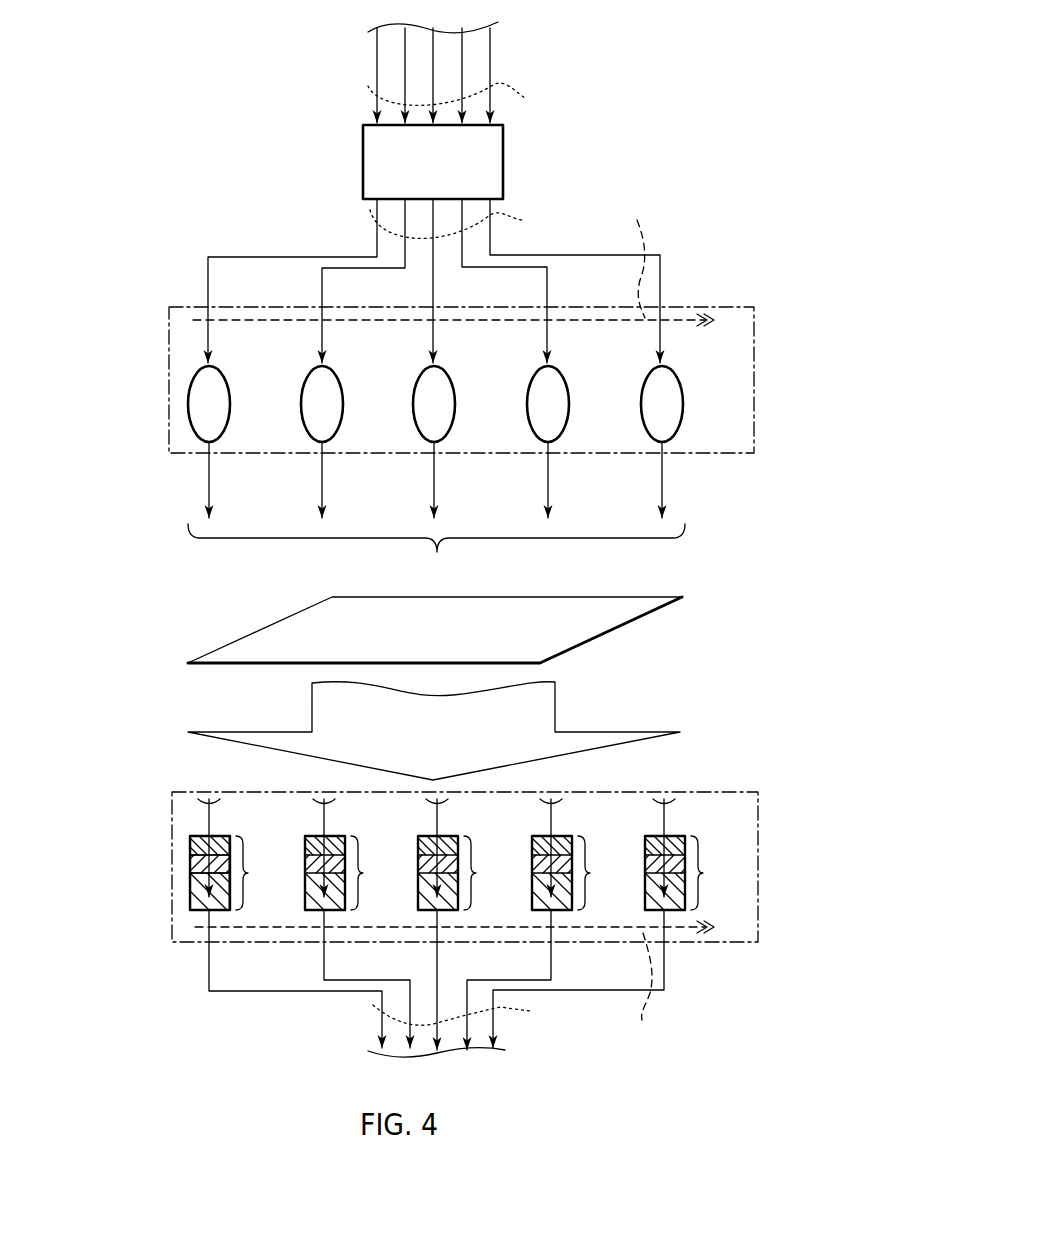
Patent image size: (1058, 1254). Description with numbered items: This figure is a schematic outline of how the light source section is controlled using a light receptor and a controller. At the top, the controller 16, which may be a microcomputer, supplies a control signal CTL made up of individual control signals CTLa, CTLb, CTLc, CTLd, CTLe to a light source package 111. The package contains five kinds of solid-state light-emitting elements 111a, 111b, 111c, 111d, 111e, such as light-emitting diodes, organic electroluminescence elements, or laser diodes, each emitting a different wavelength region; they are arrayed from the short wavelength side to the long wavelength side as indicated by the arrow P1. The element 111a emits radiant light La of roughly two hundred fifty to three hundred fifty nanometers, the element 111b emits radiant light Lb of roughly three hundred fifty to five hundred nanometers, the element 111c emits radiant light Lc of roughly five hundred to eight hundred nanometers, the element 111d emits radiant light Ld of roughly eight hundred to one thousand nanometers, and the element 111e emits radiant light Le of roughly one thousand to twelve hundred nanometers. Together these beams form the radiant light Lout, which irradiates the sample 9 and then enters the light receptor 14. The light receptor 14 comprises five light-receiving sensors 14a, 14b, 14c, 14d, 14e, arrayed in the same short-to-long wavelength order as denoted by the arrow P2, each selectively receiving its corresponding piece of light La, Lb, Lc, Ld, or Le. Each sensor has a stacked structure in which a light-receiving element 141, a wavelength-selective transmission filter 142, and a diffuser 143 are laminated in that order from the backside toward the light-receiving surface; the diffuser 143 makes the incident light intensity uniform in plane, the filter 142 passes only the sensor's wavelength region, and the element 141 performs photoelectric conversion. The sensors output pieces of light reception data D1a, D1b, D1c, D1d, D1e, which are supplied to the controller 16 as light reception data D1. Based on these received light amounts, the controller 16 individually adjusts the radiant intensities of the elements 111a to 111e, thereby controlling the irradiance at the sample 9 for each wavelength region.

The light reception data D1a is at (374, 45).
The light reception data D1b is at (403, 70).
The light reception data D1c is at (430, 84).
The light reception data D1d is at (466, 68).
The light reception data D1e is at (492, 45).
The light reception data D1 is at (468, 554).
The controller 16 is at (505, 160).
The control signal CTL is at (471, 224).
The control signal CTLa is at (210, 287).
The control signal CTLb is at (324, 287).
The control signal CTLc is at (436, 287).
The control signal CTLd is at (549, 287).
The control signal CTLe is at (662, 287).
The arrow P1 is at (636, 256).
The light source package 111 is at (756, 380).
The solid-state light-emitting element 111a is at (229, 382).
The solid-state light-emitting element 111b is at (342, 382).
The solid-state light-emitting element 111c is at (454, 382).
The solid-state light-emitting element 111d is at (568, 382).
The solid-state light-emitting element 111e is at (682, 382).
The radiant light La is at (211, 472).
The radiant light Lb is at (324, 472).
The radiant light Lc is at (436, 472).
The radiant light Ld is at (550, 472).
The radiant light Le is at (664, 472).
The radiant light Lout is at (436, 652).
The sample 9 is at (607, 632).
The light receptor 14 is at (760, 865).
The light-receiving sensor 14a is at (241, 854).
The light-receiving sensor 14b is at (356, 854).
The light-receiving sensor 14c is at (468, 854).
The light-receiving sensor 14d is at (583, 854).
The light-receiving sensor 14e is at (696, 854).
The light-receiving element 141 is at (191, 890).
The wavelength-selective transmission filter 142 is at (191, 862).
The diffuser 143 is at (191, 845).
The arrow P2 is at (641, 994).